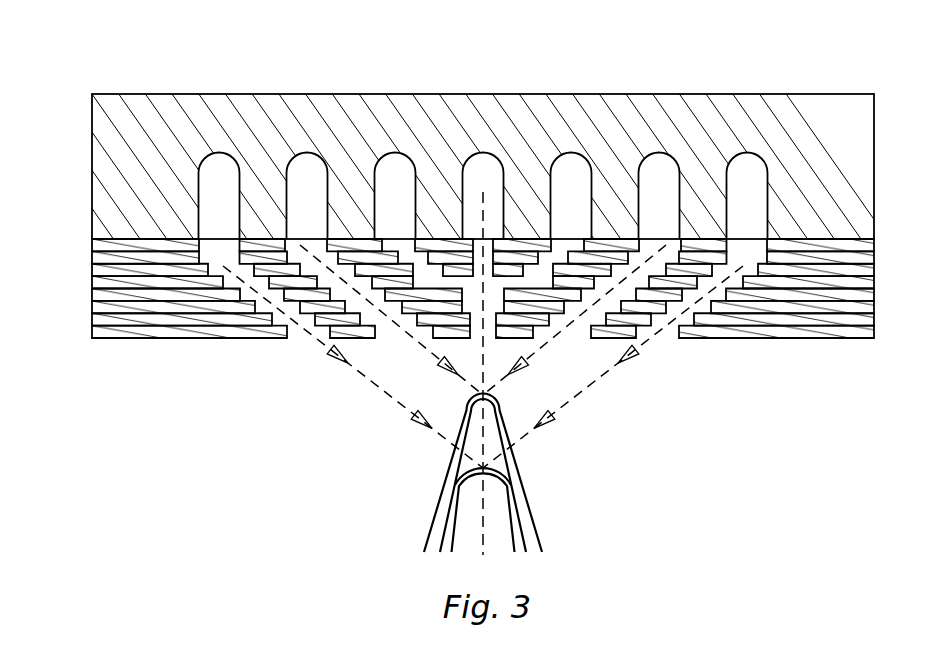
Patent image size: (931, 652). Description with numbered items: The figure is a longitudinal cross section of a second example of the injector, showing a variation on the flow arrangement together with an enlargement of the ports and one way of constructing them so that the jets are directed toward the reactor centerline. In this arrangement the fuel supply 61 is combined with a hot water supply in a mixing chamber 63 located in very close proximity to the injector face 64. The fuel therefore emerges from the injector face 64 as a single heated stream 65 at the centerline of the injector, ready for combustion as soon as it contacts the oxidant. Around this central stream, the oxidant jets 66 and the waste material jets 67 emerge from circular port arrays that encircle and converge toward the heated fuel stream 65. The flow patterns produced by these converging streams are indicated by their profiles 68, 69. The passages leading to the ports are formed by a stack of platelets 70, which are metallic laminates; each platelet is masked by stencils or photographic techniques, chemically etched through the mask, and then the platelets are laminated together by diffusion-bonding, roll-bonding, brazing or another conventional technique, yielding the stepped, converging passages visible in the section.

The fuel supply 61 is at (489, 163).
The mixing chamber 63 is at (474, 297).
The injector face 64 is at (247, 340).
The heated stream 65 is at (484, 365).
The oxidant jets 66 is at (550, 340).
The waste material jets 67 is at (648, 338).
The profile 68 is at (461, 423).
The profile 69 is at (452, 514).
The platelets 70 is at (77, 240).